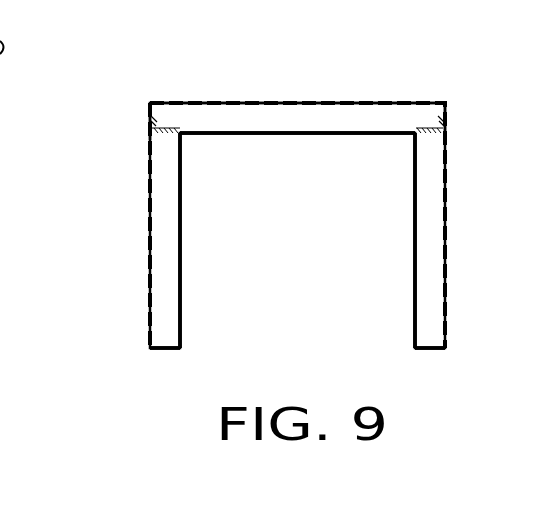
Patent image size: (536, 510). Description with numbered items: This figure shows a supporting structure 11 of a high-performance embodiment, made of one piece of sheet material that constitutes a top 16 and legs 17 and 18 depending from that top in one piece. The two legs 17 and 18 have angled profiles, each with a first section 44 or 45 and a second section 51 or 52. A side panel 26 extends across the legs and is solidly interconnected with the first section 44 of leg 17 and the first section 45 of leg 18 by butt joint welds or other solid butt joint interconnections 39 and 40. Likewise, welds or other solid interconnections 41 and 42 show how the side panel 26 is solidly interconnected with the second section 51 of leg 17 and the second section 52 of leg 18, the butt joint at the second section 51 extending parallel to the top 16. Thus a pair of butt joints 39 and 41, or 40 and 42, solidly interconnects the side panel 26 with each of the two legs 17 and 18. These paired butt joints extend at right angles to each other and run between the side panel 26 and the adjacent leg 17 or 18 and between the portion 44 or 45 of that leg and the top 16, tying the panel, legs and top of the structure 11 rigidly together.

The supporting structure 11 is at (318, 104).
The top 16 is at (215, 103).
The leg 17 is at (181, 223).
The leg 18 is at (421, 228).
The side panel 26 is at (322, 118).
The butt joint weld 39 is at (182, 140).
The butt joint weld 40 is at (432, 133).
The weld 41 is at (153, 120).
The weld 42 is at (440, 112).
The first section of angled profile 44 is at (168, 322).
The first section of angled profile 45 is at (426, 318).
The second section of angled profile 51 is at (152, 124).
The second section of angled profile 52 is at (445, 117).